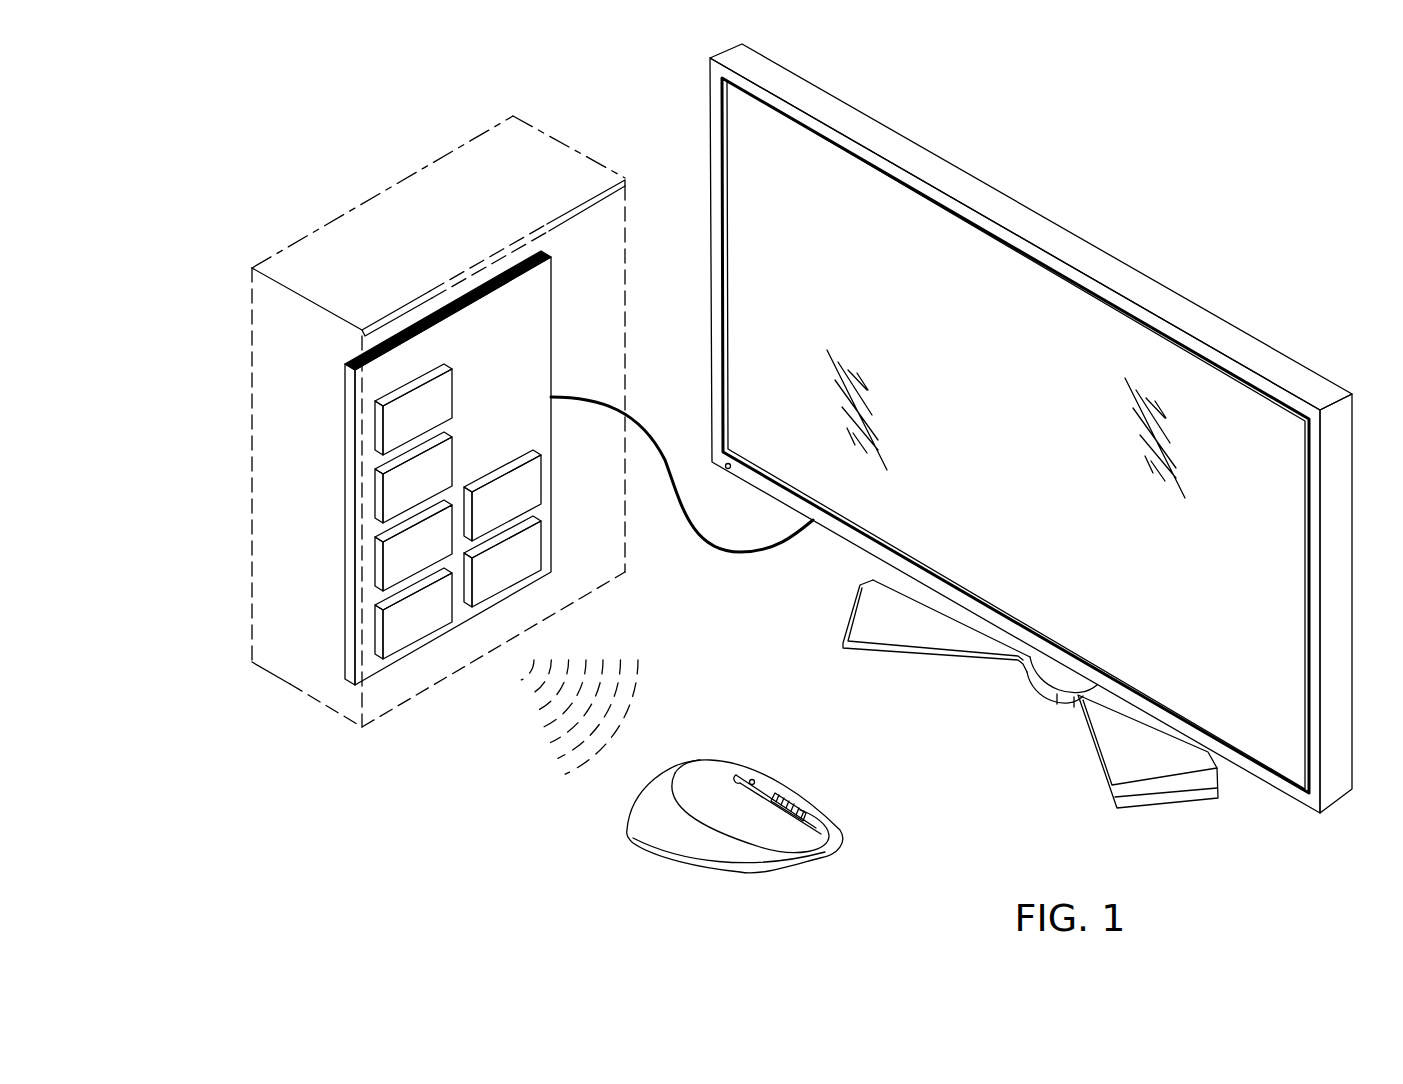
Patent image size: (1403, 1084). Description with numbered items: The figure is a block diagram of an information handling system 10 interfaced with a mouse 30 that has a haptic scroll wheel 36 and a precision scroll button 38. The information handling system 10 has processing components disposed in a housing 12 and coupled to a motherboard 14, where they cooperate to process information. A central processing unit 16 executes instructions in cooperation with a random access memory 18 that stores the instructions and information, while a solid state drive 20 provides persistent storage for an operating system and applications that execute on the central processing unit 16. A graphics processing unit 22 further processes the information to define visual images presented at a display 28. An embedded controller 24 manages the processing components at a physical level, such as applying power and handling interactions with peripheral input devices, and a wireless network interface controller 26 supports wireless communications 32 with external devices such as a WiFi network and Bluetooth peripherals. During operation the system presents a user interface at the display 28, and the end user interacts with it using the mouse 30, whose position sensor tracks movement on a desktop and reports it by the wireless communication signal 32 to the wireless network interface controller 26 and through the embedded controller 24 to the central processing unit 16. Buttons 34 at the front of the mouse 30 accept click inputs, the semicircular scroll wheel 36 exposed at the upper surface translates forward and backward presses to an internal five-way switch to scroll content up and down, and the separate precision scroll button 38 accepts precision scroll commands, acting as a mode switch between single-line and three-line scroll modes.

The information handling system 10 is at (274, 175).
The housing 12 is at (252, 374).
The motherboard 14 is at (532, 348).
The central processing unit (CPU) 16 is at (393, 428).
The random access memory (RAM) 18 is at (393, 505).
The solid state drive (SSD) 20 is at (393, 568).
The graphics processing unit (GPU) 22 is at (393, 637).
The embedded controller 24 is at (535, 553).
The wireless network interface controller (WNIC) 26 is at (533, 484).
The display 28 is at (1140, 287).
The mouse 30 is at (734, 878).
The wireless communications 32 is at (560, 792).
The buttons 34 is at (828, 823).
The scroll wheel 36 is at (801, 803).
The precision scroll button 38 is at (752, 778).